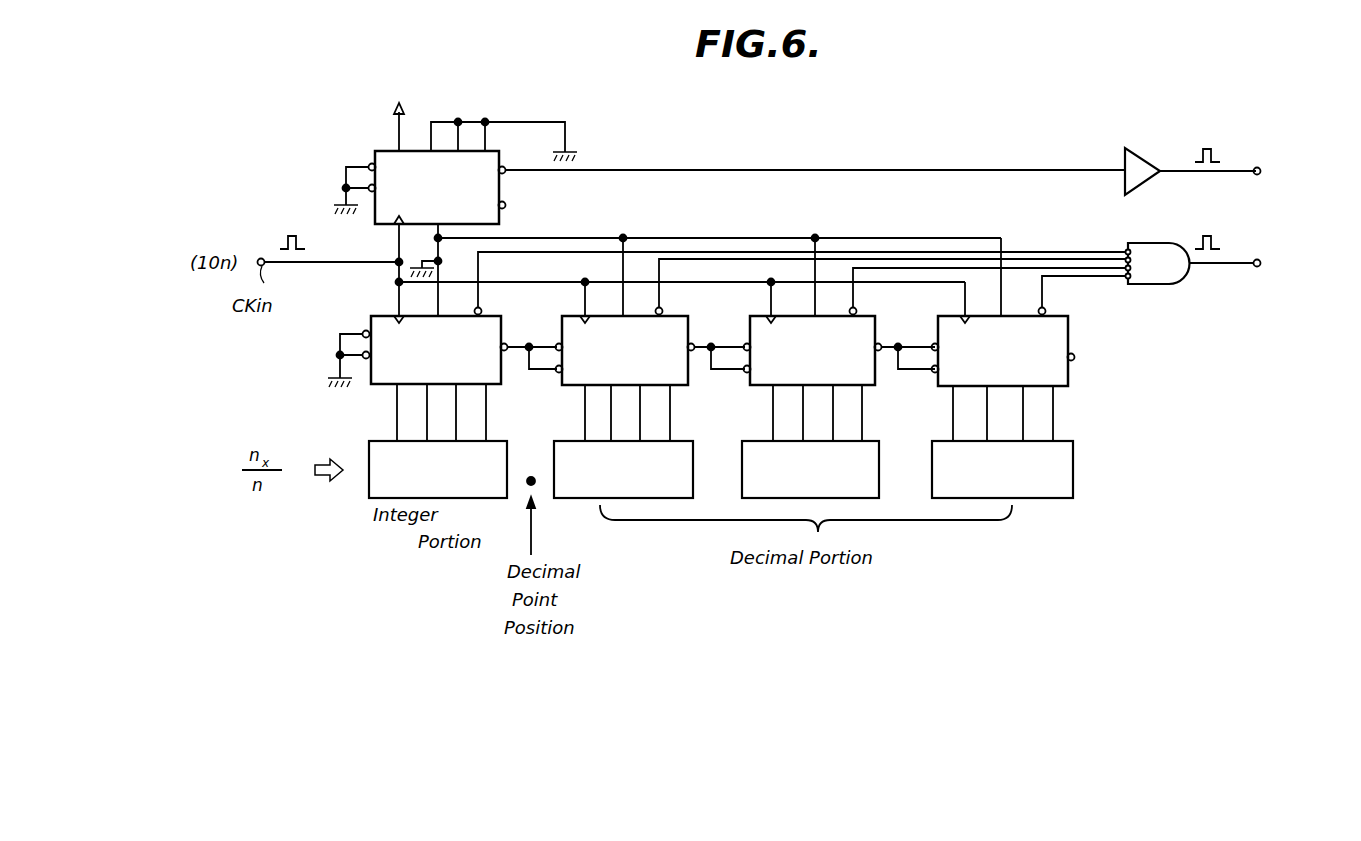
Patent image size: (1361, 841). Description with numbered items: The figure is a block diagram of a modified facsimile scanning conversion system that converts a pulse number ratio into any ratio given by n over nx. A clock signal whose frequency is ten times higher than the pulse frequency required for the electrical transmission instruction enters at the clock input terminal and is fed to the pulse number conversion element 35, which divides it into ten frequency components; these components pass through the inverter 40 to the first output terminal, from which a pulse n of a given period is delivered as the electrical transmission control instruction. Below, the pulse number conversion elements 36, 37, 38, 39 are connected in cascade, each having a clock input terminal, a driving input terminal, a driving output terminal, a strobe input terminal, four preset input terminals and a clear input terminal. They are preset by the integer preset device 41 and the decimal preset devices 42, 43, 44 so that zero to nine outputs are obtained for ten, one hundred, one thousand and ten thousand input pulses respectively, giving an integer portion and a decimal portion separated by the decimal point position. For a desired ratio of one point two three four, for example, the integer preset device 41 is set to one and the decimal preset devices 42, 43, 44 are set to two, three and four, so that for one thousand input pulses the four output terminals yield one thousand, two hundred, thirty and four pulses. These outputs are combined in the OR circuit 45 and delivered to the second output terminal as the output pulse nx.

The pulse number conversion element 35 is at (376, 152).
The pulse number conversion element 36 is at (499, 386).
The pulse number conversion element 37 is at (688, 388).
The pulse number conversion element 38 is at (875, 388).
The pulse number conversion element 39 is at (1068, 373).
The inverter 40 is at (1140, 160).
The integer preset device 41 is at (482, 500).
The decimal preset device 42 is at (575, 500).
The decimal preset device 43 is at (879, 456).
The decimal preset device 44 is at (1073, 459).
The OR circuit 45 is at (1178, 277).